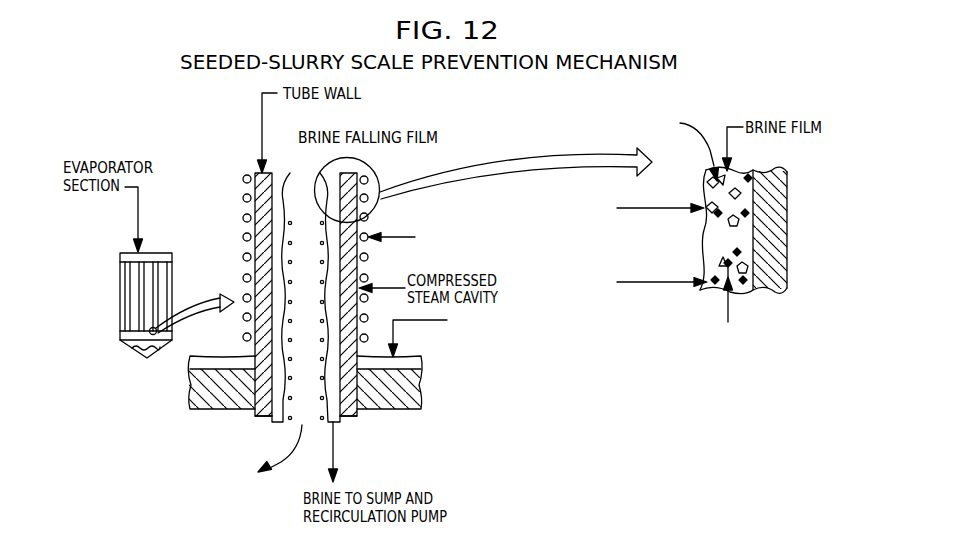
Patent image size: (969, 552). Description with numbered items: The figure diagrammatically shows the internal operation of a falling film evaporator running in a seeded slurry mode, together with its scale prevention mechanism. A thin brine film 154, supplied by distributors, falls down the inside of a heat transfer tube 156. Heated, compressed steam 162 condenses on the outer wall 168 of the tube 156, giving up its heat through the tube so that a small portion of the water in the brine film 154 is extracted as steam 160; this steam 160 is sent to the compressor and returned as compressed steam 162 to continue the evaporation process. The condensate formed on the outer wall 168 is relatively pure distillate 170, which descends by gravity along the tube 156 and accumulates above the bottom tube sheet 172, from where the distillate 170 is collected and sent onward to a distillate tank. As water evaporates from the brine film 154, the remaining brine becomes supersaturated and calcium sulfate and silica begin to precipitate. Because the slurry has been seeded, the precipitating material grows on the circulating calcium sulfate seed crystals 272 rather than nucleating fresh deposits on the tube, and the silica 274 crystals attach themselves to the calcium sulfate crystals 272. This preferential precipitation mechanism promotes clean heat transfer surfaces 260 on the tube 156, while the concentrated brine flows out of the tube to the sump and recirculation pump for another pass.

The brine film 154 is at (280, 160).
The heat transfer tube 156 is at (260, 416).
The steam 160 is at (287, 454).
The compressed steam 162 is at (400, 237).
The outer wall 168 is at (242, 182).
The distillate 170 is at (421, 321).
The bottom tube sheet 172 is at (393, 423).
The clean heat transfer surfaces 260 is at (277, 228).
The calcium sulfate seed crystals 272 is at (670, 211).
The silica 274 is at (726, 309).